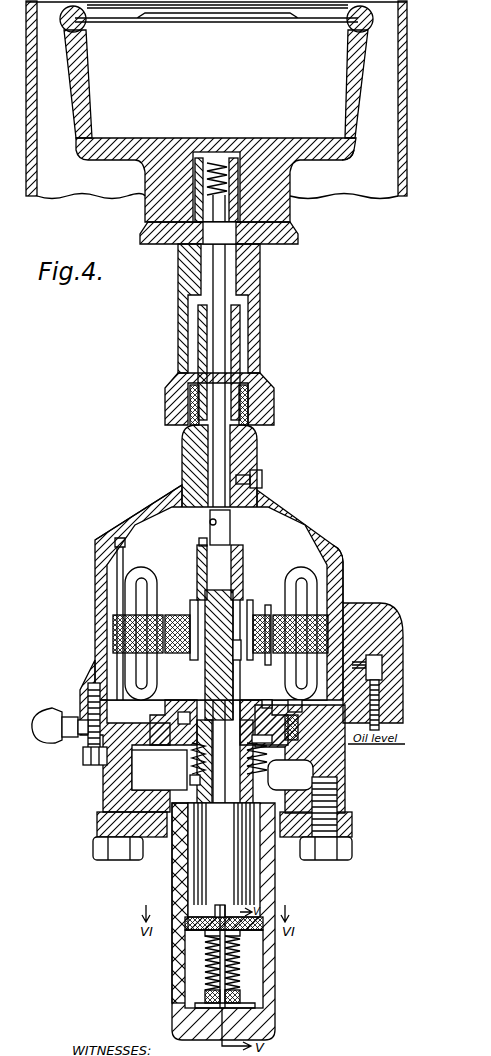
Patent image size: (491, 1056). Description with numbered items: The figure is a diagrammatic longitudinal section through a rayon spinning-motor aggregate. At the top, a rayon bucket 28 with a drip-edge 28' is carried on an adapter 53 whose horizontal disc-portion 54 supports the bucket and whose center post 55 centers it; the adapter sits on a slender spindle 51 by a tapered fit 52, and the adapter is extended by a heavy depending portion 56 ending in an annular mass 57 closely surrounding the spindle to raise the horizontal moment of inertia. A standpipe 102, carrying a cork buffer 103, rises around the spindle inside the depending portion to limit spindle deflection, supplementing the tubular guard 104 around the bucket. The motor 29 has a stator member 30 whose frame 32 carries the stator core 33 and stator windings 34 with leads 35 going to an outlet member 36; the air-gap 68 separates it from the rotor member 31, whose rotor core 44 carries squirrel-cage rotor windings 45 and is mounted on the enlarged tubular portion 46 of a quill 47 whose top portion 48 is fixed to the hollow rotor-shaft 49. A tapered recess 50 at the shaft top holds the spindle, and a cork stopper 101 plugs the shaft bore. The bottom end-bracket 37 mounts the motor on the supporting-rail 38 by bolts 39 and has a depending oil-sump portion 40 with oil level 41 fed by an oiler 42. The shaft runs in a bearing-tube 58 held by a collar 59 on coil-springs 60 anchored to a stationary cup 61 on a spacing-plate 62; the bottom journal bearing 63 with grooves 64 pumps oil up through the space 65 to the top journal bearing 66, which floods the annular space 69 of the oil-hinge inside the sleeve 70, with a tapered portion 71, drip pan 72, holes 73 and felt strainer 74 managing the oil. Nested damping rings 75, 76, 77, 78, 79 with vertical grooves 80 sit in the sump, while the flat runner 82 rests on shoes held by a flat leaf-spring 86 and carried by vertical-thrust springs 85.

The tubular guard 104 is at (408, 58).
The rayon bucket 28 is at (226, 113).
The drip-edge 28' is at (362, 165).
The tapered fit 52 is at (243, 200).
The center post or nose 55 is at (232, 184).
The spindle 51 is at (221, 365).
The horizontal disc-portion 54 is at (299, 233).
The adapter 53 is at (310, 266).
The depending portion 56 is at (178, 288).
The standpipe 102 is at (240, 343).
The annular mass 57 is at (275, 400).
The cork buffer 103 is at (249, 415).
The stator frame 32 is at (280, 509).
The stator member 30 is at (344, 556).
The motor 29 is at (360, 530).
The outlet member 36 is at (395, 630).
The leads 35 is at (358, 672).
The oil level 41 is at (310, 730).
The bottom end-bracket 37 is at (88, 766).
The oiler 42 is at (46, 716).
The stator windings 34 is at (300, 574).
The stator core 33 is at (268, 600).
The cork stopper 101 is at (282, 634).
The top journal bearing 66 is at (185, 614).
The annular space of oil-hinge 69 is at (179, 634).
The air-gap 68 is at (277, 627).
The rotor core 44 is at (194, 590).
The squirrel-cage rotor windings 45 is at (250, 598).
The rotor member 31 is at (253, 655).
The stationary cup 61 is at (197, 780).
The enlarged tubular portion of quill 46 is at (253, 643).
The top portion of quill 48 is at (243, 551).
The hollow rotor-shaft 49 is at (231, 527).
The tapered recess 50 is at (210, 523).
The quill 47 is at (199, 553).
The annular member or sleeve 70 is at (180, 668).
The tapered portion of bearing-tube 71 is at (262, 668).
The oil-drip pan 72 is at (188, 717).
The openings or holes 73 is at (272, 704).
The felt filter or strainer 74 is at (302, 712).
The spacing-plate 62 is at (236, 759).
The coil-springs 60 is at (268, 760).
The collar 59 is at (262, 734).
The bearing-tube 58 is at (197, 787).
The supporting-rail 38 is at (353, 824).
The bolts 39 is at (110, 860).
The oil-sump portion 40 is at (262, 905).
The bottom journal bearing 63 is at (212, 900).
The grooves 64 is at (210, 882).
The space 65 is at (208, 860).
The vertical grooves 80 is at (238, 855).
The inner damping ring 75 is at (240, 866).
The damping ring 76 is at (244, 875).
The damping ring 77 is at (248, 884).
The damping ring 78 is at (252, 892).
The outer damping ring 79 is at (256, 900).
The flat runner 82 is at (188, 922).
The flat leaf-spring 86 is at (262, 938).
The vertical-thrust springs 85 is at (205, 964).